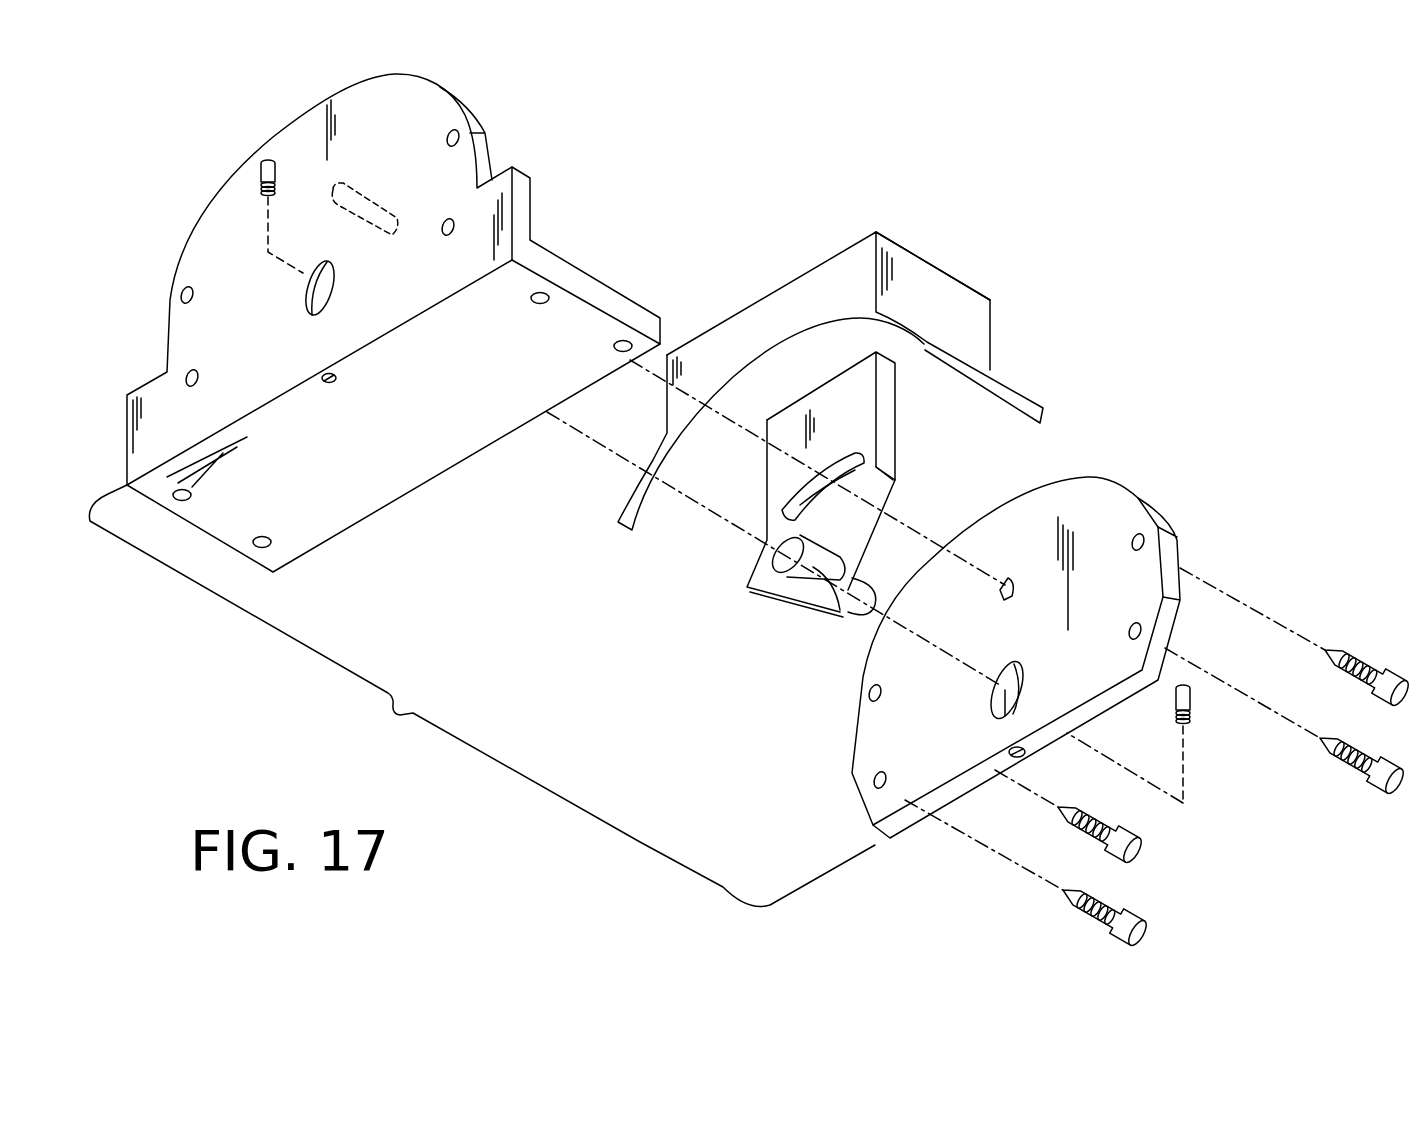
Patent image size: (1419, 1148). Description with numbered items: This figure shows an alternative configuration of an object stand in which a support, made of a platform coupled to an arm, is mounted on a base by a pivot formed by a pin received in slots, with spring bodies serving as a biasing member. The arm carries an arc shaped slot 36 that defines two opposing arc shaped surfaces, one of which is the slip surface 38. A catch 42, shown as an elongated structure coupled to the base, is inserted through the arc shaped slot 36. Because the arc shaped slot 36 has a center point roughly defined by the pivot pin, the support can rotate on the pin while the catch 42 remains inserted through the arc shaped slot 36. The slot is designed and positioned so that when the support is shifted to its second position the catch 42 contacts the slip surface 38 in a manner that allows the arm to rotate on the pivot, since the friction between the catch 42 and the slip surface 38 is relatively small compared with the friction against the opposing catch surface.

The arc shaped slot 36 is at (793, 503).
The slip surface 38 is at (813, 487).
The catch 42 is at (366, 194).